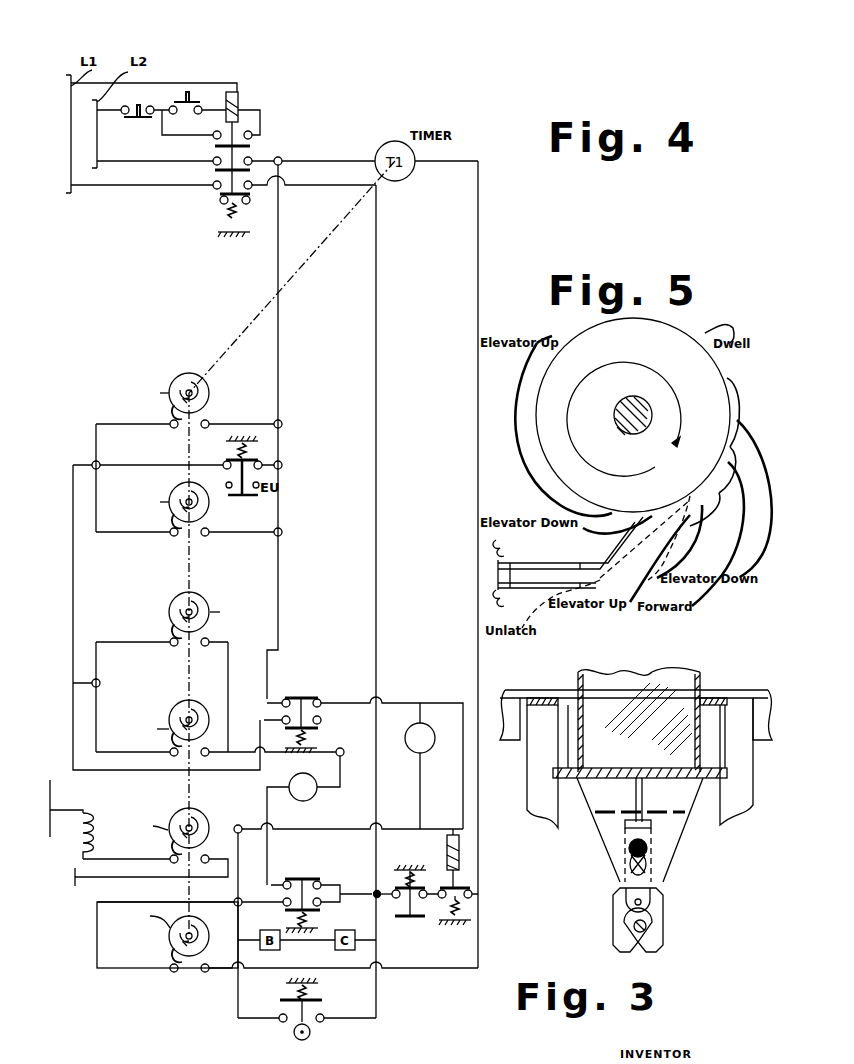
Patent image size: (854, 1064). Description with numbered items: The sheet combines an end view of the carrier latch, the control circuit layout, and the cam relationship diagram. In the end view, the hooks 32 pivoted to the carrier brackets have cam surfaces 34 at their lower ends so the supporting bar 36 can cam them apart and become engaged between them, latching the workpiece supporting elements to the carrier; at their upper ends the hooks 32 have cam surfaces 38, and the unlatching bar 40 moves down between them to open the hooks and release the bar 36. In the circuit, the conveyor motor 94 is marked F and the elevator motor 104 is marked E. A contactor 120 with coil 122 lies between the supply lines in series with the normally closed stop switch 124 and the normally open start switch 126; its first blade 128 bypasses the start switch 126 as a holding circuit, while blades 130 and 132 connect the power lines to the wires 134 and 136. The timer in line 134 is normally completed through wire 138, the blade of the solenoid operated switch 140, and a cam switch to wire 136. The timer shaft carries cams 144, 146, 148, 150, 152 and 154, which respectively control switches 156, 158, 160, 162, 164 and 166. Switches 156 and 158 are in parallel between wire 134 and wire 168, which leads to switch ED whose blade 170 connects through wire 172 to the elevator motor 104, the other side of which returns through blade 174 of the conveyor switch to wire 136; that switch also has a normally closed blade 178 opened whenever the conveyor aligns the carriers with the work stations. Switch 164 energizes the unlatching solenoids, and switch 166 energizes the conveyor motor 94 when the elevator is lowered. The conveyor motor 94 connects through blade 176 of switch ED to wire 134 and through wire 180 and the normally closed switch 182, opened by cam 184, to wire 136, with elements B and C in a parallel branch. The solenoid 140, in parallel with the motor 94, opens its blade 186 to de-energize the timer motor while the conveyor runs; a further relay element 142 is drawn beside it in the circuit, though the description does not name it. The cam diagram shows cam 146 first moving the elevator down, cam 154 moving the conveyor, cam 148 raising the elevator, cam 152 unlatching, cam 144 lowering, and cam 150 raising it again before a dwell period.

In FIG. 3, the hooks 32 is at (613, 904).
In FIG. 3, the cam surfaces 34 is at (644, 952).
In FIG. 3, the supporting bar 36 is at (652, 928).
In FIG. 3, the cam surfaces 38 is at (650, 863).
In FIG. 3, the unlatching bar 40 is at (648, 850).
In FIG. 4, the conveyor motor 94 is at (433, 746).
In FIG. 4, the elevator motor 104 is at (310, 798).
In FIG. 4, the contactor 120 is at (232, 122).
In FIG. 4, the coil 122 is at (234, 96).
In FIG. 4, the stop switch 124 is at (138, 104).
In FIG. 4, the start switch 126 is at (190, 100).
In FIG. 4, the first blade 128 is at (250, 146).
In FIG. 4, the blade 130 is at (218, 170).
In FIG. 4, the blade 132 is at (222, 200).
In FIG. 4, the wire 134 is at (312, 161).
In FIG. 4, the wire 136 is at (340, 186).
In FIG. 4, the wire 138 is at (478, 440).
In FIG. 4, the solenoid operated switch 140 is at (459, 862).
In FIG. 4, the relay contact 142 is at (412, 918).
In FIG. 4, the cam 144 is at (175, 380).
In FIG. 5, the cam 144 is at (568, 561).
In FIG. 4, the cam 146 is at (172, 494).
In FIG. 5, the cam 146 is at (730, 404).
In FIG. 4, the cam 148 is at (178, 600).
In FIG. 5, the cam 148 is at (708, 498).
In FIG. 4, the cam 150 is at (172, 716).
In FIG. 5, the cam 150 is at (620, 488).
In FIG. 4, the cam 152 is at (184, 814).
In FIG. 5, the cam 152 is at (606, 562).
In FIG. 4, the cam 154 is at (175, 935).
In FIG. 5, the cam 154 is at (718, 466).
In FIG. 4, the switch 156 is at (174, 430).
In FIG. 4, the switch 158 is at (176, 538).
In FIG. 4, the switch 160 is at (176, 647).
In FIG. 4, the switch 162 is at (176, 756).
In FIG. 4, the switch 164 is at (208, 857).
In FIG. 4, the switch 166 is at (176, 975).
In FIG. 4, the wire 168 is at (73, 590).
In FIG. 4, the blade 170 is at (318, 724).
In FIG. 4, the wire 172 is at (343, 750).
In FIG. 4, the blade 174 is at (318, 866).
In FIG. 4, the blade 176 is at (286, 698).
In FIG. 4, the blade 178 is at (320, 908).
In FIG. 4, the wire 180 is at (398, 829).
In FIG. 4, the switch 182 is at (314, 1013).
In FIG. 4, the cam 184 is at (310, 1034).
In FIG. 4, the blade 186 is at (425, 888).